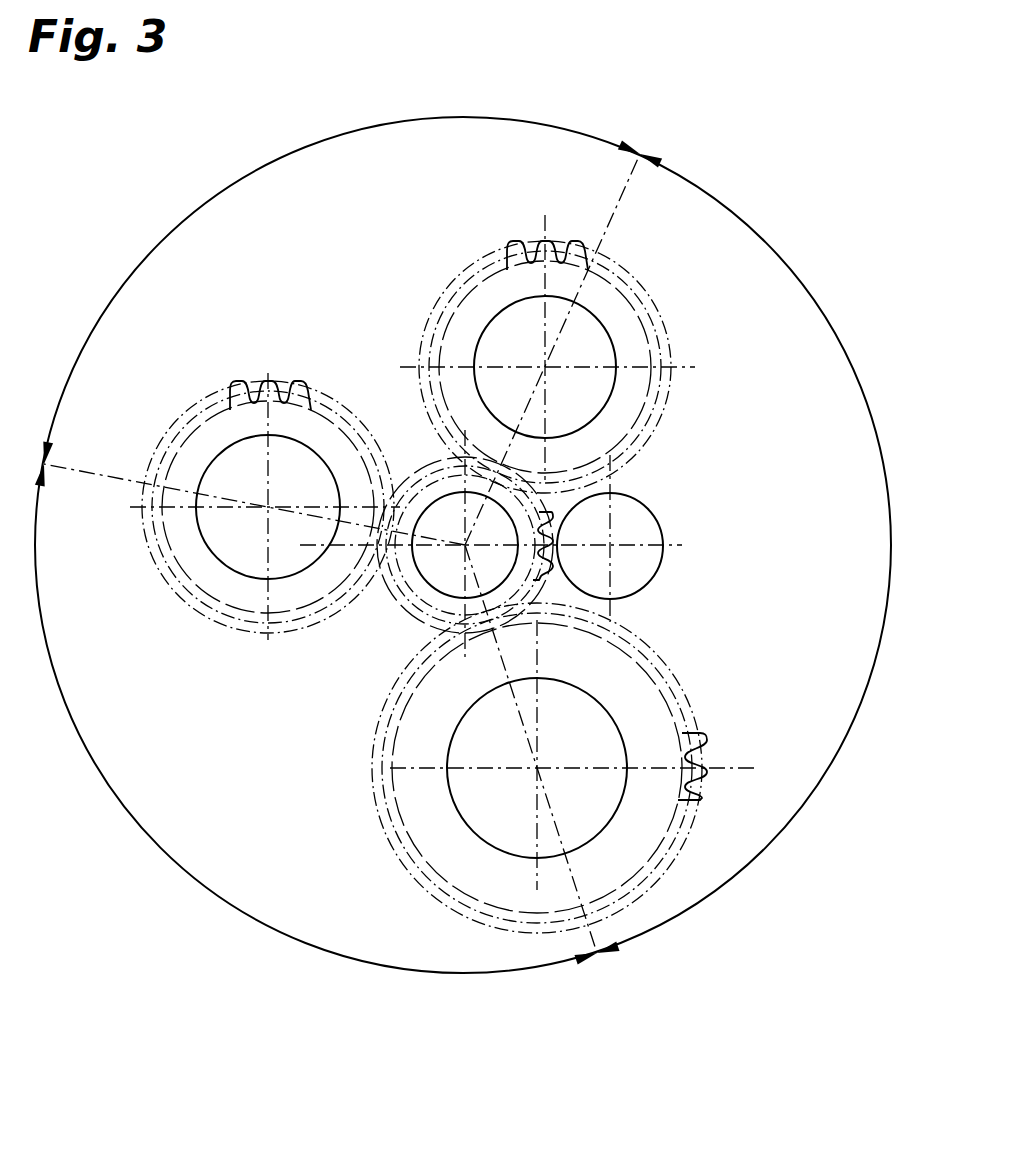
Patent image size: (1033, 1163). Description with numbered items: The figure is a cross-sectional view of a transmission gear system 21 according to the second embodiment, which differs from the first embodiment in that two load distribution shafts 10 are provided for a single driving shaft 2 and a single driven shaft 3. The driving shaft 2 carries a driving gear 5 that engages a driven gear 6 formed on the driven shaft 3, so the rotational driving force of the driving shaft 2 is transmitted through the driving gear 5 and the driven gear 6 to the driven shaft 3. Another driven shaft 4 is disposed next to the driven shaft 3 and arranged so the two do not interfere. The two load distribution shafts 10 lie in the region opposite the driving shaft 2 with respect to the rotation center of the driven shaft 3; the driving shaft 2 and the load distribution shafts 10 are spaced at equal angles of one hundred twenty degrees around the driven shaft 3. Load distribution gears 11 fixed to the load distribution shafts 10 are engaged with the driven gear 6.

The driving shaft 2 is at (593, 838).
The driven shaft 3 is at (432, 568).
The driven shaft 4 is at (657, 576).
The driving gear 5 is at (700, 800).
The driven gear 6 is at (552, 512).
The load distribution shafts 10 is at (228, 568).
The load distribution gears 11 is at (232, 385).
The transmission gear system 21 is at (707, 162).